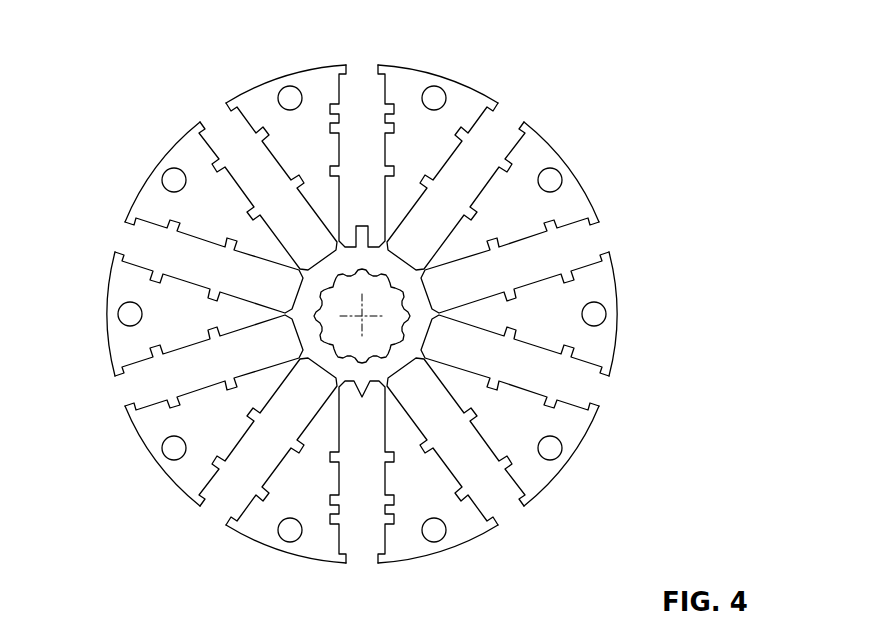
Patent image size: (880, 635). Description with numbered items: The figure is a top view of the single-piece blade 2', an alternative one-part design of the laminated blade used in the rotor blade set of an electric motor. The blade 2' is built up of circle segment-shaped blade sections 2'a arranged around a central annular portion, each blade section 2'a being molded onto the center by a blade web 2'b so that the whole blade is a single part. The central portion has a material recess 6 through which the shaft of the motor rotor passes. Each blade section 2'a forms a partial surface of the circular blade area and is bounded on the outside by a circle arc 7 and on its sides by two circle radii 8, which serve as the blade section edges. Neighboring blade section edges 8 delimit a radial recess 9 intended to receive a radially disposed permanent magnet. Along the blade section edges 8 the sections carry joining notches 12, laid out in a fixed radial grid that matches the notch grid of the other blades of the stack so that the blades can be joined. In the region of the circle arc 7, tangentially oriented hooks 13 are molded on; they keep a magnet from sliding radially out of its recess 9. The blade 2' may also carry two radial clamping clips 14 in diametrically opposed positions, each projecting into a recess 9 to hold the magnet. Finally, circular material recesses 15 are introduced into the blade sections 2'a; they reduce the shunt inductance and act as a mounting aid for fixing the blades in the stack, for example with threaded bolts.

The single-piece blade 2' is at (411, 314).
The blade section 2'a is at (132, 153).
The blade web 2'b is at (241, 147).
The material recess 6 is at (371, 323).
The circle arc 7 is at (468, 82).
The circle radii 8 is at (192, 345).
The radial recess 9 is at (173, 255).
The notches 12 is at (342, 111).
The tangential hooks 13 is at (589, 376).
The radial clamping clip 14 is at (362, 400).
The circular material recess 15 is at (126, 313).